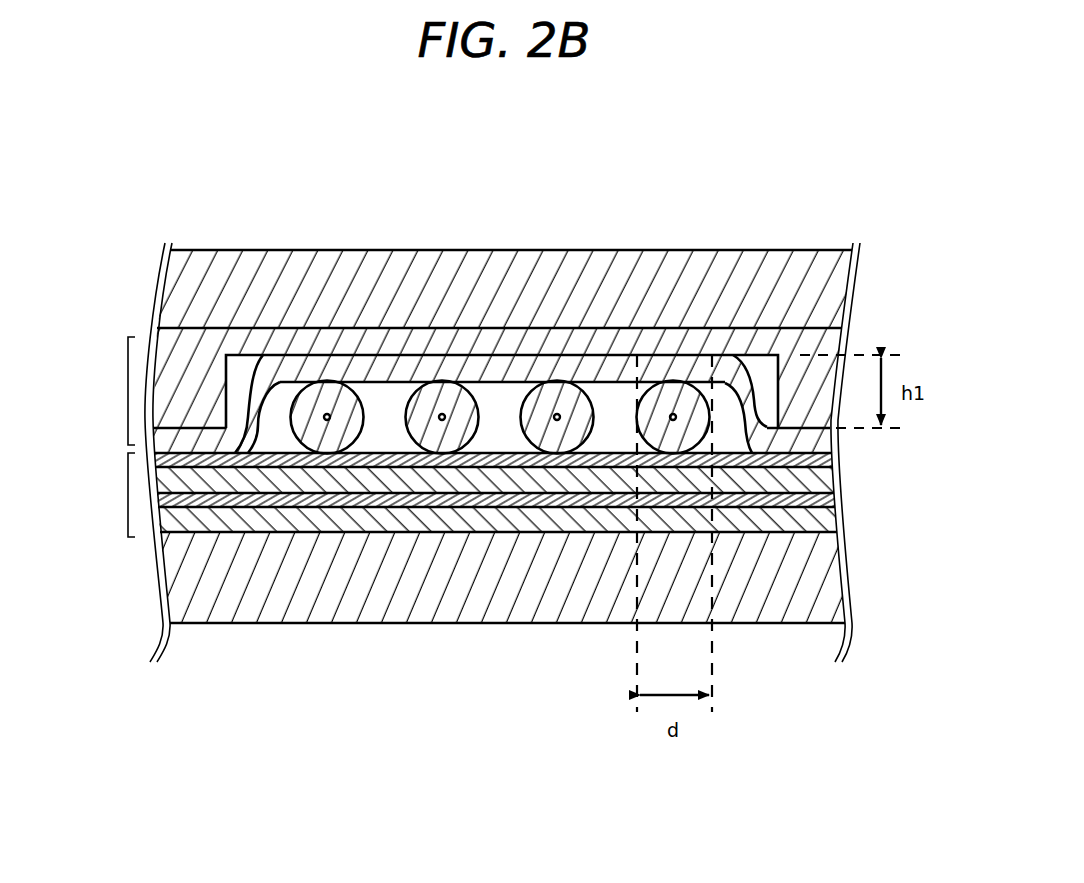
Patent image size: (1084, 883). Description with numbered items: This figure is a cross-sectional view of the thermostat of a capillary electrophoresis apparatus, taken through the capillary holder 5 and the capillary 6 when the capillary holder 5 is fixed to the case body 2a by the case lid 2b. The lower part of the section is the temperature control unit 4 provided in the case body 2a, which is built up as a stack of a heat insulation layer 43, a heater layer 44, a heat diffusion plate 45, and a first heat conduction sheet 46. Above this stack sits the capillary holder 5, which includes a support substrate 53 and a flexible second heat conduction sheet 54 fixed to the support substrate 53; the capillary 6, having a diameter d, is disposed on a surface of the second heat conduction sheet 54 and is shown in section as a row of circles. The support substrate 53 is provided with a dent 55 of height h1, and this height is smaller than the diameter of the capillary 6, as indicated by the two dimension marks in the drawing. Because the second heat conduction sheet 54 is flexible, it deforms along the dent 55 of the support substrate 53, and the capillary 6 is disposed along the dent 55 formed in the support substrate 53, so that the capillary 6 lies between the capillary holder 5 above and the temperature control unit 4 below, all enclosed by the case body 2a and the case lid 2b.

The case body 2a is at (822, 607).
The case lid 2b is at (795, 250).
The temperature control unit 4 is at (127, 493).
The capillary holder 5 is at (127, 390).
The capillary 6 is at (680, 386).
The heat insulation layer 43 is at (835, 548).
The heater layer 44 is at (833, 522).
The heat diffusion plate 45 is at (832, 497).
The first heat conduction sheet 46 is at (830, 472).
The support substrate 53 is at (828, 348).
The second heat conduction sheet 54 is at (822, 450).
The dent 55 is at (242, 333).